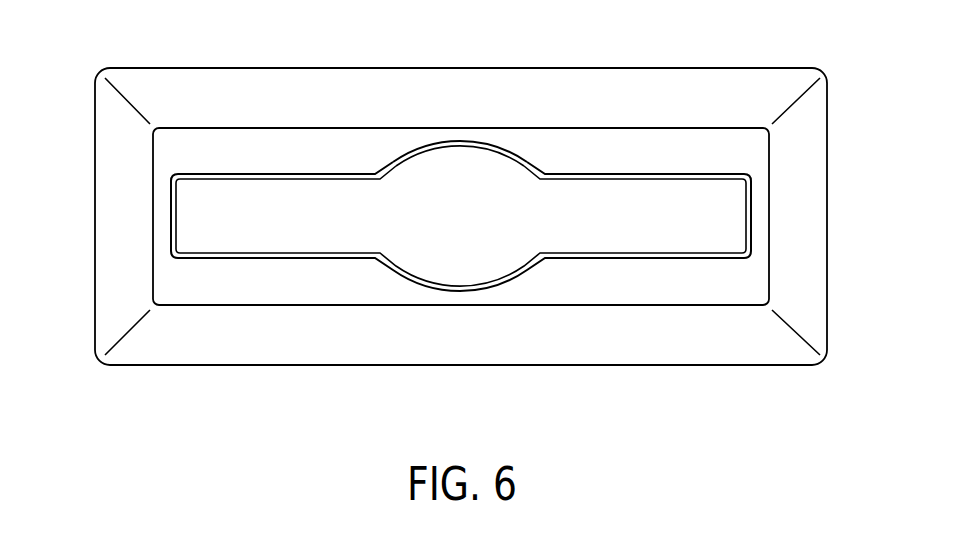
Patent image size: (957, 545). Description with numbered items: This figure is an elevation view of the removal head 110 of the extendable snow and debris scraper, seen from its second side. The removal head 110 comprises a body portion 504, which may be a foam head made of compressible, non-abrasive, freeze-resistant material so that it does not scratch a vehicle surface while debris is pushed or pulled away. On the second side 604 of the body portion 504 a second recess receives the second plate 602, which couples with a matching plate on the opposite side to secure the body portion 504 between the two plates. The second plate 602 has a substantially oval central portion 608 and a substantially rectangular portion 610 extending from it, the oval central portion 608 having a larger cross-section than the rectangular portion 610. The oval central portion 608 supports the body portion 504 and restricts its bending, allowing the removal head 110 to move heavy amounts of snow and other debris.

The removal head 110 is at (70, 68).
The body portion 504 is at (828, 192).
The second plate 602 is at (261, 197).
The second side 604 is at (661, 292).
The substantially oval central portion 608 is at (462, 143).
The substantially rectangular portion 610 is at (632, 177).